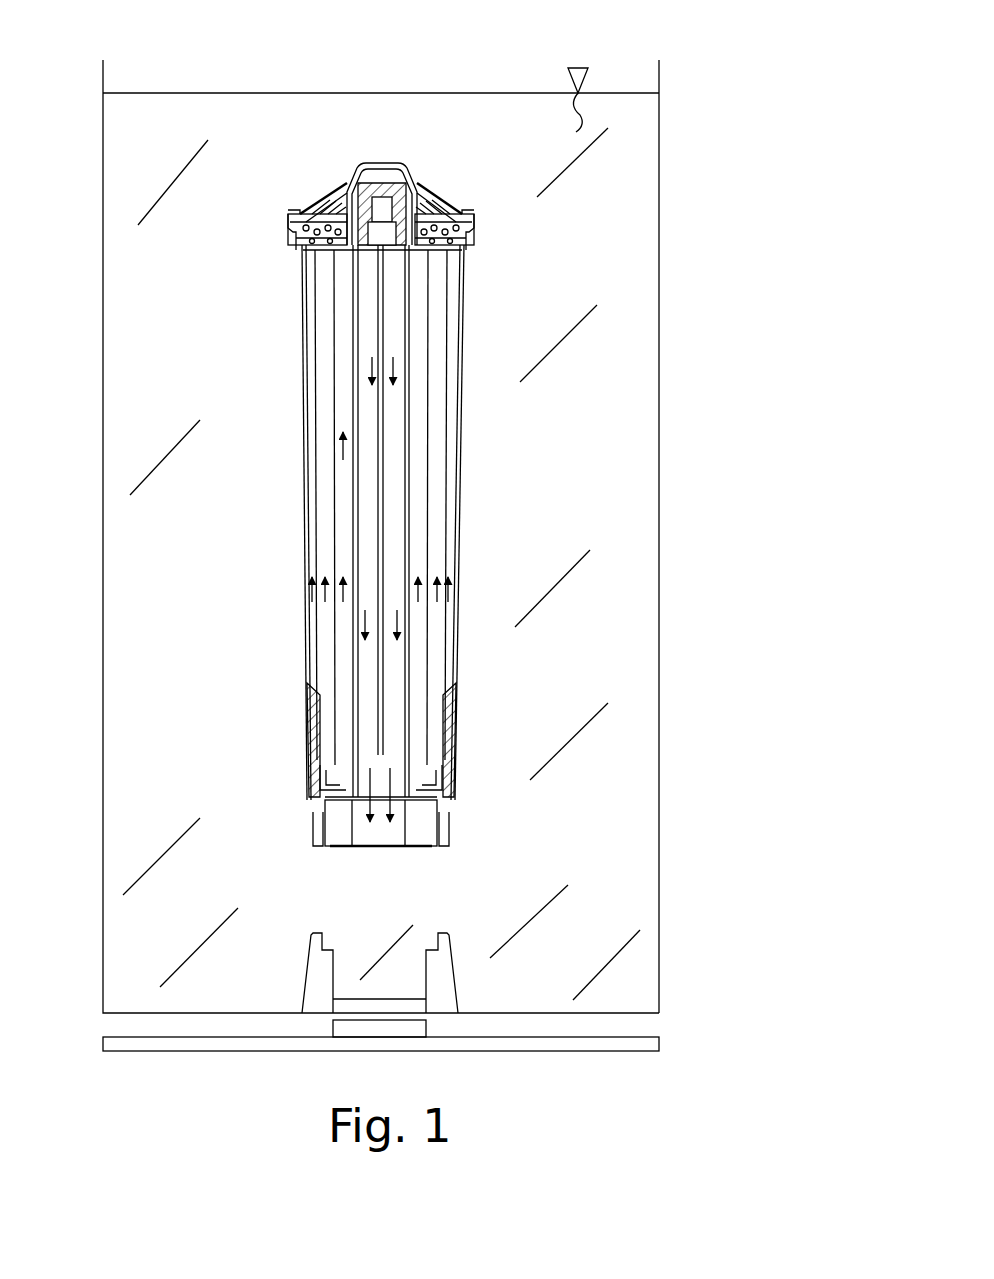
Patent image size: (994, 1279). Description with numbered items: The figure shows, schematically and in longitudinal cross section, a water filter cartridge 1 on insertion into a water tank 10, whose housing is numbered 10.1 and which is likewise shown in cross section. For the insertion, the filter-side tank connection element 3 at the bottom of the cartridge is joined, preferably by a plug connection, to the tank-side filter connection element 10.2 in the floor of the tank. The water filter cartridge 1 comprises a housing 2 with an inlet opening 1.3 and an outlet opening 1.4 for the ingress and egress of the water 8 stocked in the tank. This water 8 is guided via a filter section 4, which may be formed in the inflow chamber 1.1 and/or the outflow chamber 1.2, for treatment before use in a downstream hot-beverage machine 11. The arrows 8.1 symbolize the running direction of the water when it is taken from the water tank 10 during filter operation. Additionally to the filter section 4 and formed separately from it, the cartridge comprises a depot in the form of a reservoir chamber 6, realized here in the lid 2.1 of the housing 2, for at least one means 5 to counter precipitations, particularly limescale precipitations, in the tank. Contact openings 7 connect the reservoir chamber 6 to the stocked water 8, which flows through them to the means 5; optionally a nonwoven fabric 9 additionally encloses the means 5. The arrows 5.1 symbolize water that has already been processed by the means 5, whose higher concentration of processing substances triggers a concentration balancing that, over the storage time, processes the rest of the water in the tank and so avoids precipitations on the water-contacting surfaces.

The water filter cartridge 1 is at (375, 477).
The inflow chamber 1.1 is at (337, 300).
The outflow chamber 1.2 is at (400, 437).
The inlet opening 1.3 is at (447, 832).
The outlet opening 1.4 is at (362, 848).
The housing 2 is at (303, 462).
The lid 2.1 is at (424, 170).
The filter-side tank connection element 3 is at (434, 875).
The filter section 4 is at (338, 395).
The means to counter precipitations 5 is at (292, 243).
The arrows 5.1 is at (318, 200).
The reservoir chamber 6 is at (294, 237).
The contact openings 7 is at (320, 196).
The water 8 is at (156, 470).
The arrows 8.1 is at (345, 590).
The nonwoven fabric 9 is at (304, 208).
The water tank 10 is at (676, 148).
The housing of the water tank 10.1 is at (660, 842).
The tank-side filter connection element 10.2 is at (296, 966).
The hot-beverage machine 11 is at (660, 1037).